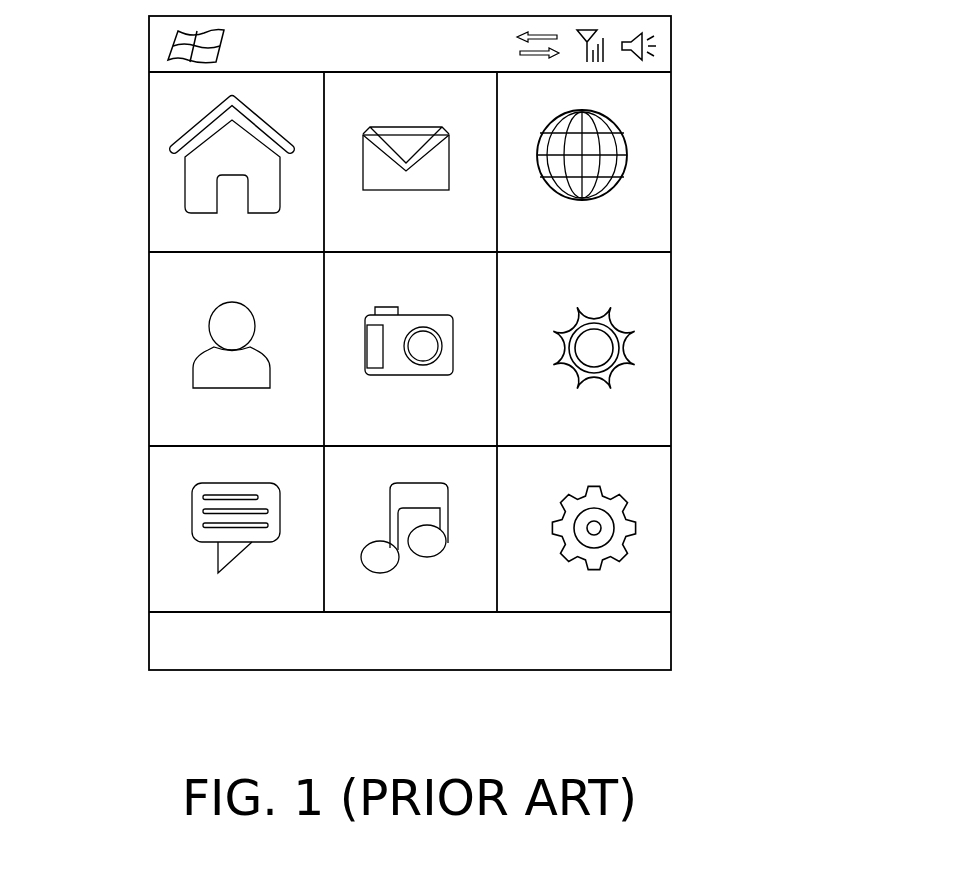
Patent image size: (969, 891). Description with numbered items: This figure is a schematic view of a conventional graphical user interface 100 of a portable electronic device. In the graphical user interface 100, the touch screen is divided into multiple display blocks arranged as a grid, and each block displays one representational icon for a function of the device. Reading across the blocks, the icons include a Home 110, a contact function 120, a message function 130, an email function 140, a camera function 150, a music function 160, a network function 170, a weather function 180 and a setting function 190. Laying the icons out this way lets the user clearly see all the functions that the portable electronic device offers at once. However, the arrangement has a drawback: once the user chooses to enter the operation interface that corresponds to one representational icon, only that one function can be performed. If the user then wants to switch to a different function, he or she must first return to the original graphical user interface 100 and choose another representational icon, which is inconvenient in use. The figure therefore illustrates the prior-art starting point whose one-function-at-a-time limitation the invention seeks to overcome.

The graphical user interface 100 is at (672, 537).
The Home 110 is at (155, 198).
The contact function 120 is at (158, 390).
The message function 130 is at (158, 560).
The email function 140 is at (472, 103).
The camera function 150 is at (472, 283).
The music function 160 is at (472, 476).
The network function 170 is at (653, 143).
The weather function 180 is at (652, 398).
The setting function 190 is at (652, 580).